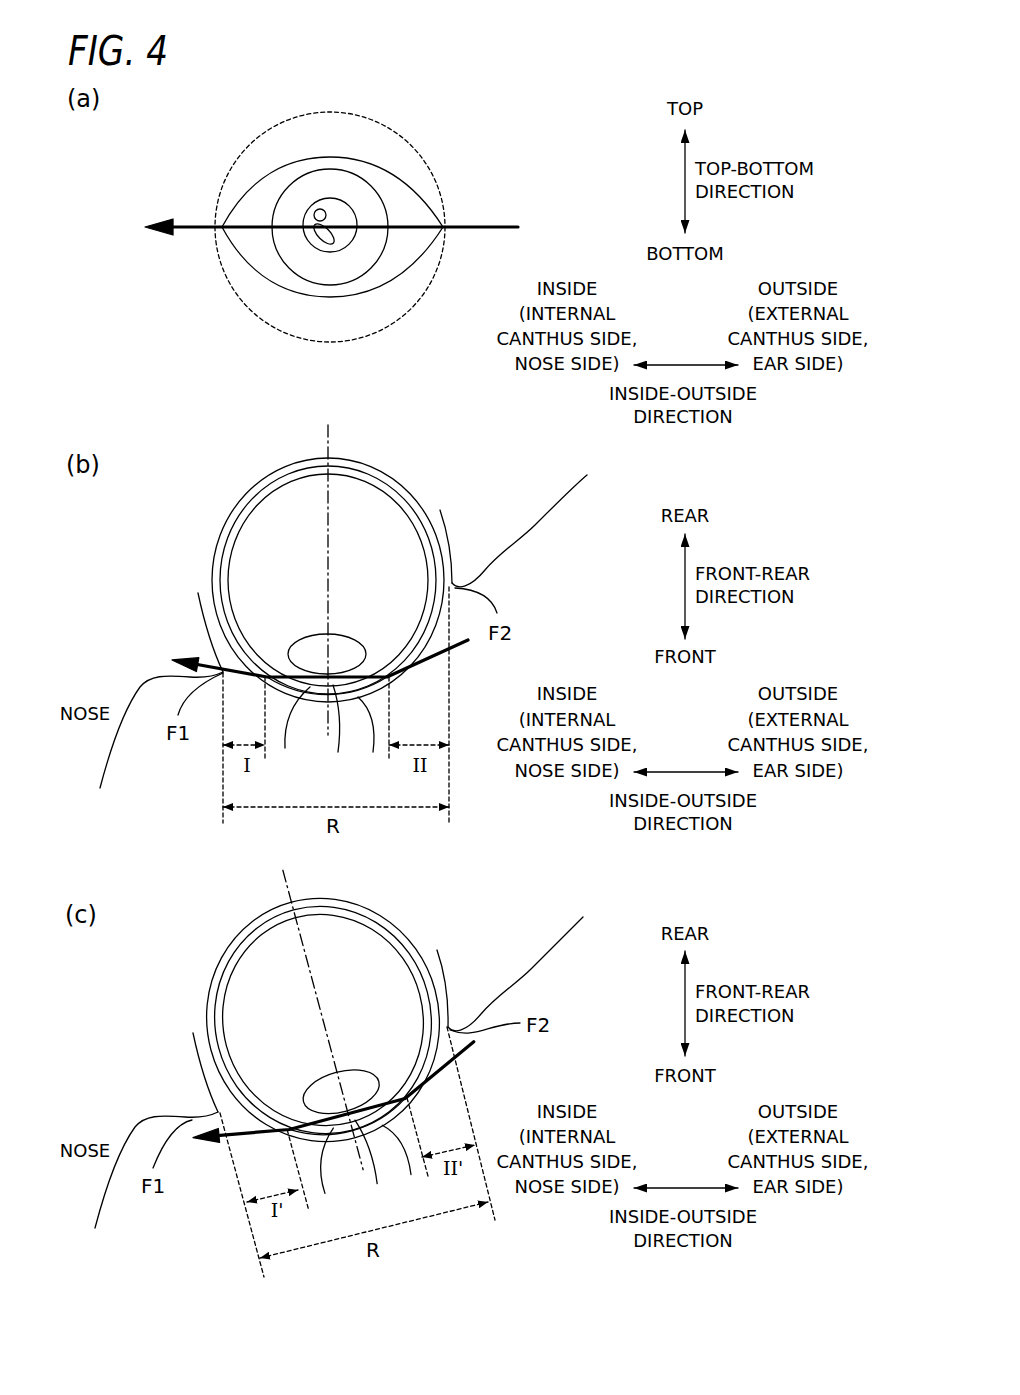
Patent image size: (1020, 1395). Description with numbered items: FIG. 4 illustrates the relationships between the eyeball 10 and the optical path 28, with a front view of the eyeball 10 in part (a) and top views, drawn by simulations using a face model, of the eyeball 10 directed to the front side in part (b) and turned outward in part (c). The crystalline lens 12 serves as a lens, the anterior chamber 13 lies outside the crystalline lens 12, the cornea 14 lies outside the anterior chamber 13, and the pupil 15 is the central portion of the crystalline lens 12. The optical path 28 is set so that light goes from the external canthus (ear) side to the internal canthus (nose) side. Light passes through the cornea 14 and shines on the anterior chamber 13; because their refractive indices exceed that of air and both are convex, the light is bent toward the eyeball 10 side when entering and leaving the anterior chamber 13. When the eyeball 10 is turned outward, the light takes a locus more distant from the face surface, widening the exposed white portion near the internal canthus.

The eyeball 10 is at (387, 122).
The crystalline lens 12 is at (312, 647).
The anterior chamber 13 is at (335, 183).
The cornea 14 is at (346, 941).
The pupil 15 is at (343, 252).
The optical path 28 is at (470, 230).